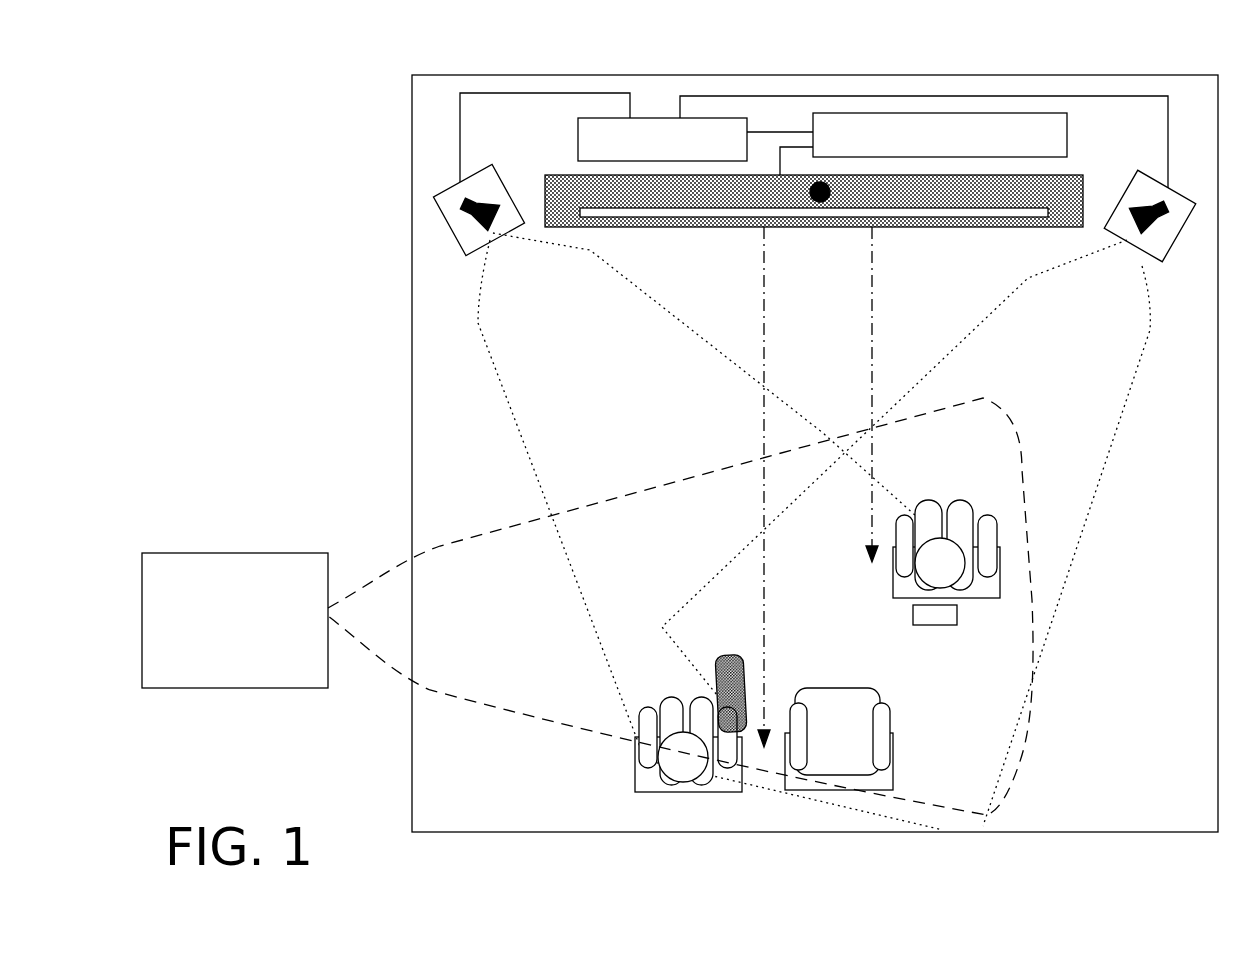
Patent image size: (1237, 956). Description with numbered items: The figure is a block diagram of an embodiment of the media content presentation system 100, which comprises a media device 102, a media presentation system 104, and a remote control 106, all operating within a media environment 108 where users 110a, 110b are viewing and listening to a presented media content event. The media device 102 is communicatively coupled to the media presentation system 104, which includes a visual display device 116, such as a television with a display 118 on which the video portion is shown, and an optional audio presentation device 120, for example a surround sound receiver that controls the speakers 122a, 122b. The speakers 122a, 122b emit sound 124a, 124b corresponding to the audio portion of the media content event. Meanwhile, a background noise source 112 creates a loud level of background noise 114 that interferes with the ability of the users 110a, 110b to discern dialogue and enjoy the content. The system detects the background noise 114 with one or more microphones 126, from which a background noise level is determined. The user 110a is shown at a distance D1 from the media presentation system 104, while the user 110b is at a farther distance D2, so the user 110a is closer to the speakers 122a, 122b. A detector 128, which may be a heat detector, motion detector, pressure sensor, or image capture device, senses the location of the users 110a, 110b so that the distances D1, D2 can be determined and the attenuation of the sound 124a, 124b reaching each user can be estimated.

The media content presentation system 100 is at (815, 453).
The media device 102 is at (1051, 148).
The media presentation system 104 is at (605, 309).
The remote control 106 is at (748, 623).
The media environment 108 is at (1203, 824).
The user 110a is at (963, 518).
The user 110b is at (672, 713).
The background noise source 112 is at (312, 678).
The background noise 114 is at (487, 712).
The visual display device 116 is at (718, 262).
The display 118 is at (963, 228).
The audio presentation device (APD) 120 is at (733, 152).
The speaker 122a is at (1140, 172).
The speaker 122b is at (492, 165).
The sound 124a is at (1111, 500).
The sound 124b is at (500, 439).
The microphone 126 is at (950, 625).
The detector 128 is at (818, 202).
The distance D1 is at (872, 332).
The distance D2 is at (763, 430).